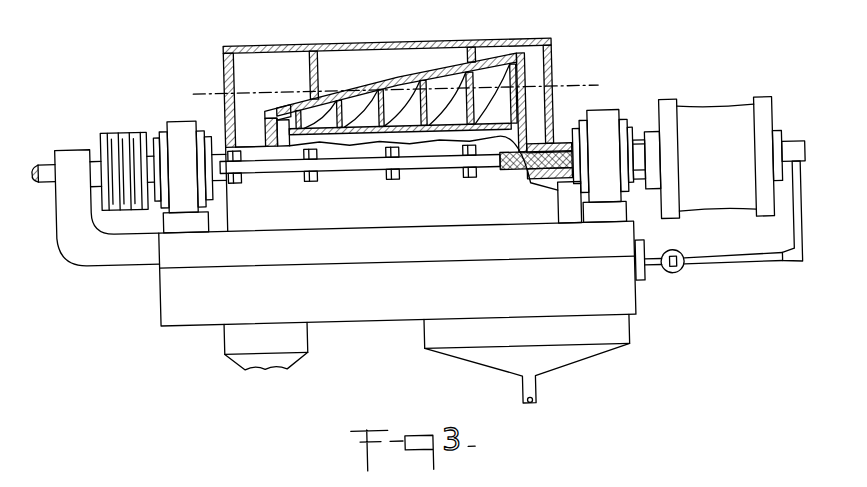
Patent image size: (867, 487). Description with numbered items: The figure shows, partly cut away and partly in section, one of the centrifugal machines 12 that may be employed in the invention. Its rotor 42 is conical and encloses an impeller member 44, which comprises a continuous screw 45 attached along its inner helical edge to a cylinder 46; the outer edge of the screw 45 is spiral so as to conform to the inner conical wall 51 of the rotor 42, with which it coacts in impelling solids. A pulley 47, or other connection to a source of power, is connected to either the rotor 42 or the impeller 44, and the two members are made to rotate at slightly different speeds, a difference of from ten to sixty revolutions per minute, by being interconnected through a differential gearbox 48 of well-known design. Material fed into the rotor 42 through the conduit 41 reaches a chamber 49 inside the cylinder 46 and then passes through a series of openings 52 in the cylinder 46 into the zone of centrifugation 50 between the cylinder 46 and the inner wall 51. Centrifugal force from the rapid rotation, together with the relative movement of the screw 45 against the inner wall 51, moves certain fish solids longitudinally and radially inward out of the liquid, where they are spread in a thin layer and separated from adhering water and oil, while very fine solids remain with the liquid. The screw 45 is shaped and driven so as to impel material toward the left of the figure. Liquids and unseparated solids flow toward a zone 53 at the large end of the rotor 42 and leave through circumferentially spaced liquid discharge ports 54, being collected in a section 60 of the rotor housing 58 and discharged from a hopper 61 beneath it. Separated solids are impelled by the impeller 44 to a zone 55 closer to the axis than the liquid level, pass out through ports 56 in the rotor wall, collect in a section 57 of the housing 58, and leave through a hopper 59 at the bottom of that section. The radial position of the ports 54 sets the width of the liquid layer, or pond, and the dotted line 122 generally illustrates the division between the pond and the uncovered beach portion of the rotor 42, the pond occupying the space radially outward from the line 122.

The centrifugal machine 12 is at (450, 42).
The conduit 41 is at (47, 156).
The rotor 42 is at (350, 92).
The impeller member 44 is at (498, 143).
The continuous screw 45 is at (424, 120).
The cylinder 46 is at (483, 126).
The pulley 47 is at (128, 126).
The differential gearbox 48 is at (708, 112).
The chamber 49 is at (338, 145).
The zone of centrifugation 50 is at (400, 93).
The inner conical wall 51 is at (415, 92).
The openings 52 is at (415, 136).
The zone 53 is at (523, 71).
The liquid discharge ports 54 is at (532, 93).
The zone 55 is at (285, 134).
The solids discharge ports 56 is at (288, 106).
The housing section 57 is at (296, 57).
The rotor housing 58 is at (398, 42).
The hopper 59 is at (295, 335).
The housing section 60 is at (543, 64).
The hopper 61 is at (613, 337).
The dotted line 122 is at (592, 89).